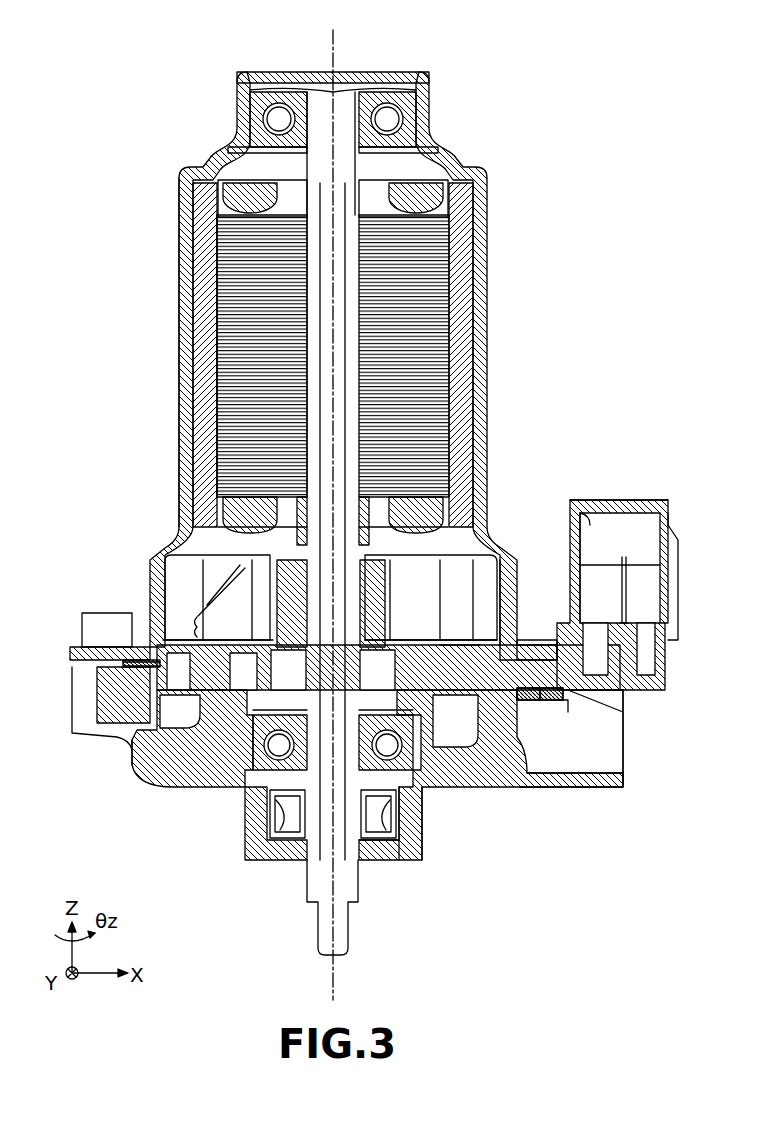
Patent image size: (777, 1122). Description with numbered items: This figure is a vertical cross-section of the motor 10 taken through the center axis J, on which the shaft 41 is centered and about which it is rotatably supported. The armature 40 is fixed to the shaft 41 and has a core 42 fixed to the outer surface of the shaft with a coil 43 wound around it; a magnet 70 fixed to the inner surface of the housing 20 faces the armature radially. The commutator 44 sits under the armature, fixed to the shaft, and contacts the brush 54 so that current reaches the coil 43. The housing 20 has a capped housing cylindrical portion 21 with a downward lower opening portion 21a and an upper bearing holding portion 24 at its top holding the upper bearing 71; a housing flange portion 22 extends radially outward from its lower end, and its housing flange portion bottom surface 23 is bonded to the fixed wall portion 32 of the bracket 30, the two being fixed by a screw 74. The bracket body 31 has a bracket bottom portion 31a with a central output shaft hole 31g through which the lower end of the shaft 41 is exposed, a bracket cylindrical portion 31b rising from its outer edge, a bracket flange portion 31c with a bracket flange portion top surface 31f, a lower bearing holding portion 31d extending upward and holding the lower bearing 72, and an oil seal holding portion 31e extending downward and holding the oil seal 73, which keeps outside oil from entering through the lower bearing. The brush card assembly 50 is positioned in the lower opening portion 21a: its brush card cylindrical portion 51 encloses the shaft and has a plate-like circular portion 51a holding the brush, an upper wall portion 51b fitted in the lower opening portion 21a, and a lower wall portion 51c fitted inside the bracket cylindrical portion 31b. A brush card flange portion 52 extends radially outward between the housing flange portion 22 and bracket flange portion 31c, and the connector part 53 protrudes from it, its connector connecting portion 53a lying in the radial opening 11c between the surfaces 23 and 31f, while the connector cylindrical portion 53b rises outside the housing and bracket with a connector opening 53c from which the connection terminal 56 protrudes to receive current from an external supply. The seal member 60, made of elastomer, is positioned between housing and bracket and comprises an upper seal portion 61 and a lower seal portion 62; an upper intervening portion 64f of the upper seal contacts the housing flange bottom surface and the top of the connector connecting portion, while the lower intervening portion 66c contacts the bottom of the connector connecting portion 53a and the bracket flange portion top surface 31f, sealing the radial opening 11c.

The motor 10 is at (548, 55).
The center axis J is at (340, 47).
The housing 20 is at (485, 270).
The housing cylindrical portion 21 is at (478, 380).
The lower opening portion 21a is at (512, 580).
The housing flange portion 22 is at (115, 660).
The housing flange portion bottom surface 23 is at (107, 690).
The upper bearing holding portion 24 is at (425, 102).
The bracket 30 is at (480, 790).
The bracket body 31 is at (377, 775).
The bracket bottom portion 31a is at (165, 760).
The bracket cylindrical portion 31b is at (555, 715).
The bracket flange portion 31c is at (575, 712).
The lower bearing holding portion 31d is at (410, 770).
The oil seal holding portion 31e is at (415, 860).
The bracket flange portion top surface 31f is at (558, 705).
The output shaft hole 31g is at (352, 880).
The fixed wall portion 32 is at (95, 693).
The armature 40 is at (432, 195).
The shaft 41 is at (316, 862).
The core 42 is at (430, 245).
The coil 43 is at (245, 205).
The commutator 44 is at (270, 605).
The brush card assembly 50 is at (672, 690).
The brush card cylindrical portion 51 is at (330, 597).
The circular portion 51a is at (455, 700).
The upper wall portion 51b is at (493, 600).
The lower wall portion 51c is at (137, 735).
The brush card flange portion 52 is at (140, 660).
The connector part 53 is at (691, 428).
The connector connecting portion 53a is at (600, 623).
The connector cylindrical portion 53b is at (675, 530).
The connector opening 53c is at (588, 520).
The brush 54 is at (192, 600).
The connection terminal 56 is at (626, 585).
The seal member 60 is at (648, 904).
The upper seal portion 61 is at (525, 705).
The lower seal portion 62 is at (552, 705).
The holder portion 64f is at (530, 640).
The lower intervening portion 66c is at (530, 702).
The magnet 70 is at (460, 330).
The upper bearing 71 is at (279, 112).
The lower bearing 72 is at (275, 765).
The oil seal 73 is at (390, 835).
The screw 74 is at (95, 620).
The radial opening 11c is at (625, 700).